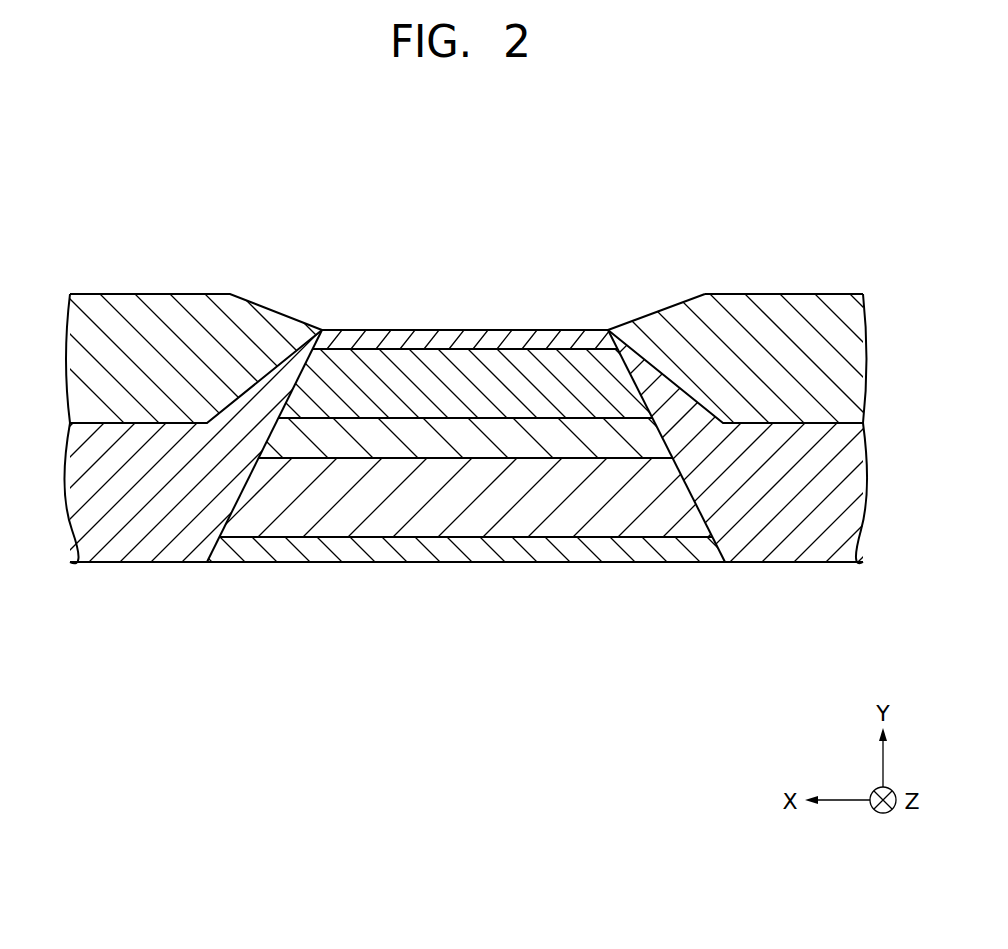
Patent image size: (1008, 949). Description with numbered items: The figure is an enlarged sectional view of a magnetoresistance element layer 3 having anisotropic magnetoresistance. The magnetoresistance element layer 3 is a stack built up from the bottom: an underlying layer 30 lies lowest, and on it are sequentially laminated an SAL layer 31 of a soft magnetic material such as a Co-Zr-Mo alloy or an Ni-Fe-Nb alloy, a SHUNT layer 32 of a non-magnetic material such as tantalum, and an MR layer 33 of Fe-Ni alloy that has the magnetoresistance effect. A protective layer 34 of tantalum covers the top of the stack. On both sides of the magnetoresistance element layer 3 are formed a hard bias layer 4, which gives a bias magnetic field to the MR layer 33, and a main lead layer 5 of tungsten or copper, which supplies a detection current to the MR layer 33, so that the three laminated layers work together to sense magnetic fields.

The magnetoresistance element layer 3 is at (493, 262).
The hard bias layer 4 is at (142, 545).
The main lead layer 5 is at (155, 308).
The underlying layer 30 is at (381, 553).
The SAL layer 31 is at (453, 492).
The SHUNT layer 32 is at (518, 442).
The MR layer 33 is at (587, 400).
The protective layer 34 is at (527, 340).